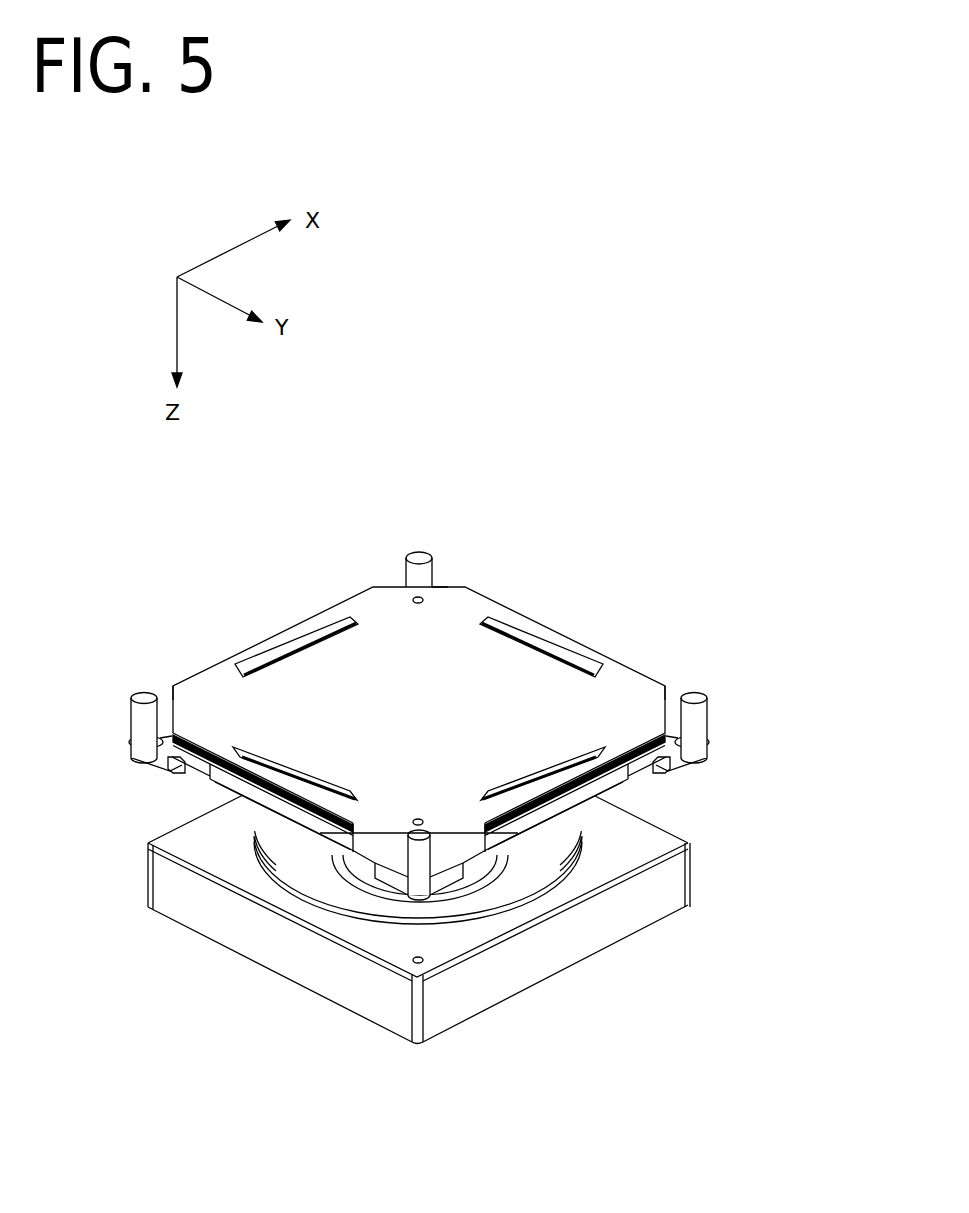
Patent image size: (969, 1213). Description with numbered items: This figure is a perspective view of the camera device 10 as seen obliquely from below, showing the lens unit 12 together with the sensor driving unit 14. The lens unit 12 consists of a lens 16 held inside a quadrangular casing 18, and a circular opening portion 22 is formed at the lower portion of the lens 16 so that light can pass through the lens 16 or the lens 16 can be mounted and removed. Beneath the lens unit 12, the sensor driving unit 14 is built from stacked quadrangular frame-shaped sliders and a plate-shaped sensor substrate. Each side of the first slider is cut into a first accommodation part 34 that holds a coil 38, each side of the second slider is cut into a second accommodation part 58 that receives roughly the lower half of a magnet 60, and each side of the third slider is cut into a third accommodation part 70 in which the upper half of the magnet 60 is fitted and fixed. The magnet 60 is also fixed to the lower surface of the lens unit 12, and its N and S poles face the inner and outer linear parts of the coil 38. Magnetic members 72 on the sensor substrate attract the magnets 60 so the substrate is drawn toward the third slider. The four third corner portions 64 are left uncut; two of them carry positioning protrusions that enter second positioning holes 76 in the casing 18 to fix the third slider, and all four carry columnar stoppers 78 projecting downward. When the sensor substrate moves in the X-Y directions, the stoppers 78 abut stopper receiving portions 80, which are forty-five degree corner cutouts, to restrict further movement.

The camera device 10 is at (628, 455).
The lens unit 12 is at (705, 867).
The sensor driving unit 14 is at (568, 620).
The lens 16 is at (272, 945).
The casing 18 is at (585, 933).
The opening portion 22 is at (258, 840).
The first accommodation part 34 is at (190, 746).
The coil 38 is at (263, 788).
The second accommodation part 58 is at (170, 770).
The magnet 60 is at (305, 830).
The third corner portion 64 is at (146, 744).
The third accommodation part 70 is at (218, 787).
The magnetic member 72 is at (508, 630).
The second positioning hole 76 is at (420, 955).
The stopper 78 is at (405, 582).
The stopper receiving portion 80 is at (445, 587).